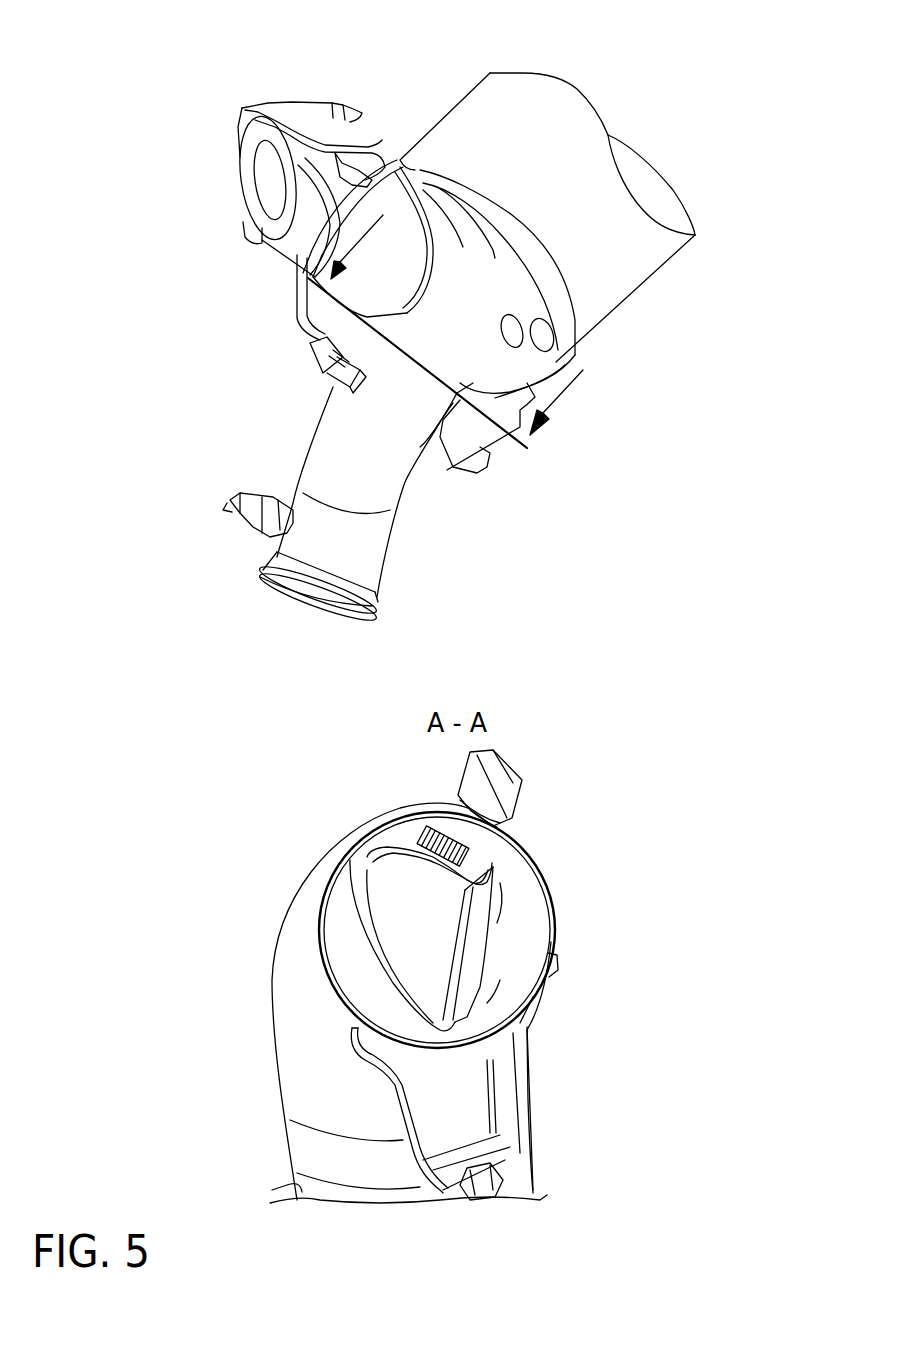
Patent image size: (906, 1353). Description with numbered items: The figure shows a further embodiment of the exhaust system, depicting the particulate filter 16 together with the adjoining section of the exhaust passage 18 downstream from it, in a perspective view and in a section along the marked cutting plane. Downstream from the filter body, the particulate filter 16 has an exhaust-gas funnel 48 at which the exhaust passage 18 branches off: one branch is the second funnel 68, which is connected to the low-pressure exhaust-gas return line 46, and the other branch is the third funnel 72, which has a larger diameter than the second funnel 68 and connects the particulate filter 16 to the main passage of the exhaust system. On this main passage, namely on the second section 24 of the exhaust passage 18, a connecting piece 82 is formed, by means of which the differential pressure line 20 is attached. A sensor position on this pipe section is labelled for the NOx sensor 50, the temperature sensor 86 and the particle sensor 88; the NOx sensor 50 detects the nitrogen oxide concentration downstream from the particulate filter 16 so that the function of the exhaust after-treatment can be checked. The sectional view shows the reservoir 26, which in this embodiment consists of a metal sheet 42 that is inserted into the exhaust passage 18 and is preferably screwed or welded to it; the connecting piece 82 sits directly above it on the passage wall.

The particulate filter 16 is at (643, 245).
The exhaust gas passage 18 is at (324, 793).
The second section of the exhaust passage 24 is at (328, 453).
The differential pressure line 20 is at (300, 295).
The reservoir 26 is at (420, 842).
The metal sheet 42 is at (472, 894).
The low-pressure exhaust-gas return line 46 is at (270, 192).
The exhaust-gas funnel 48 is at (490, 303).
The NOx sensor 50 is at (169, 518).
The second funnel 68 is at (397, 217).
The third funnel 72 is at (508, 355).
The connecting piece 82 is at (327, 360).
The temperature sensor 86 is at (169, 518).
The particle sensor 88 is at (250, 513).